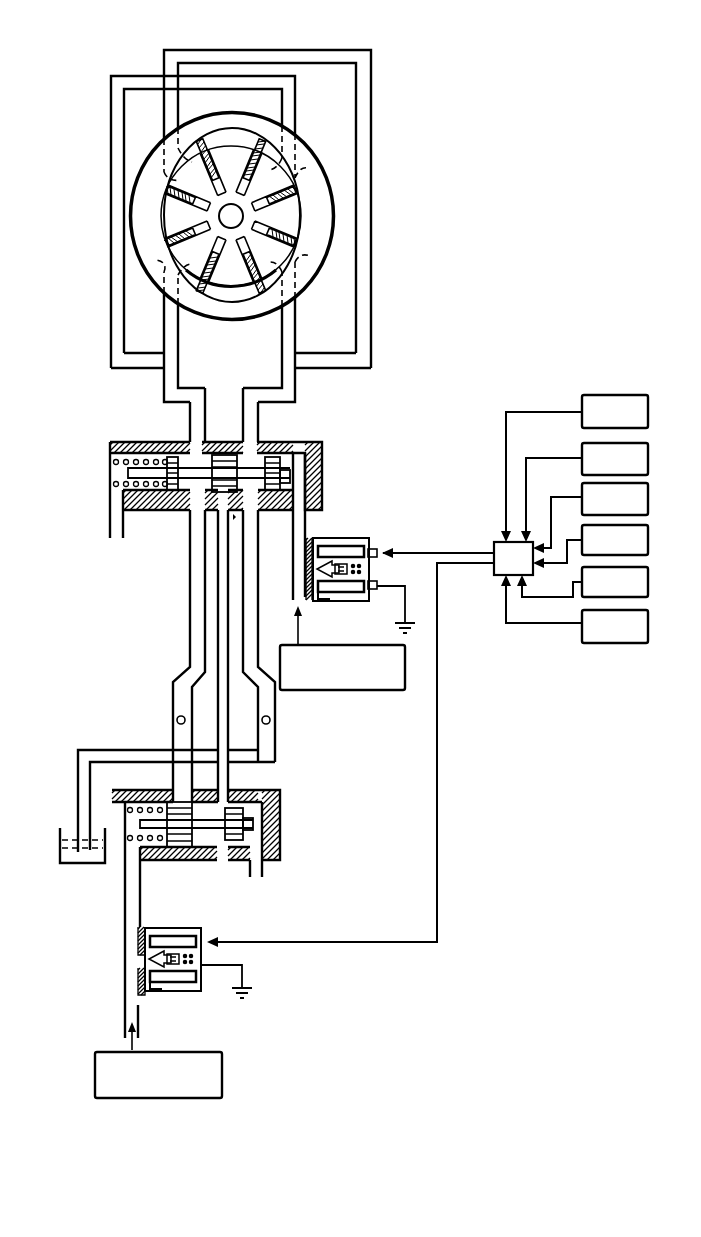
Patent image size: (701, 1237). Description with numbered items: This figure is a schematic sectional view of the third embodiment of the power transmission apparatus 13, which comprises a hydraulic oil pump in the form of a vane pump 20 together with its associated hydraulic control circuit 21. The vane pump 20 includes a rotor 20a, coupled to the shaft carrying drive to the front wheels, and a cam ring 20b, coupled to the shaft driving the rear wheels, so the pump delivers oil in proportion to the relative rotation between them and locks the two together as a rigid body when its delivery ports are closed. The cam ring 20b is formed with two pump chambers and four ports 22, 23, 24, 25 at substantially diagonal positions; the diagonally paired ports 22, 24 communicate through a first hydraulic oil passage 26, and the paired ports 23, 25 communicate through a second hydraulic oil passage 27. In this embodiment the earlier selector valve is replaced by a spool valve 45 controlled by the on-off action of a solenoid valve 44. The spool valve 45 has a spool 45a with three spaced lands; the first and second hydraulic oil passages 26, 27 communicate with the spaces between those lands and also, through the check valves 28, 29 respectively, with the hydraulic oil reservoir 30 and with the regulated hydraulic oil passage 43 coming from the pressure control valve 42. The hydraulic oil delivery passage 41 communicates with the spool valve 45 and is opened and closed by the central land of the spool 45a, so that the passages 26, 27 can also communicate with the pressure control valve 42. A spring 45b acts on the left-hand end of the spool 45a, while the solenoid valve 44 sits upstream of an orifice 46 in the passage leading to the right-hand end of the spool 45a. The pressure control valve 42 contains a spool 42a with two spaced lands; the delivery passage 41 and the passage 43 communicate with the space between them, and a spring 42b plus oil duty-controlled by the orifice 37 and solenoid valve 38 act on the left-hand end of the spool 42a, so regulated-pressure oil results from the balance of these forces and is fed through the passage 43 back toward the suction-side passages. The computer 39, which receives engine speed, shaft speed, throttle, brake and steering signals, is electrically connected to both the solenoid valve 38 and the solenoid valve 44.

The power transmission apparatus 13 is at (379, 74).
The vane pump 20 is at (244, 225).
The rotor 20a is at (275, 200).
The cam ring 20b is at (318, 221).
The hydraulic control circuit 21 is at (427, 642).
The port 22 is at (165, 277).
The port 23 is at (182, 170).
The port 24 is at (300, 162).
The port 25 is at (325, 263).
The first hydraulic oil passage 26 is at (111, 130).
The second hydraulic oil passage 27 is at (238, 53).
The first check valve 28 is at (172, 713).
The second check valve 29 is at (272, 720).
The hydraulic oil reservoir 30 is at (65, 863).
The orifice 37 is at (125, 1008).
The solenoid valve 38 is at (197, 993).
The computer 39 is at (494, 543).
The hydraulic oil delivery passage 41 is at (218, 585).
The pressure control valve 42 is at (224, 902).
The spool 42a is at (182, 833).
The spring 42b is at (142, 810).
The regulated hydraulic oil passage 43 is at (177, 780).
The solenoid valve 44 is at (338, 533).
The spool valve 45 is at (211, 489).
The spool 45a is at (172, 462).
The spring 45b is at (110, 458).
The orifice 46 is at (293, 602).